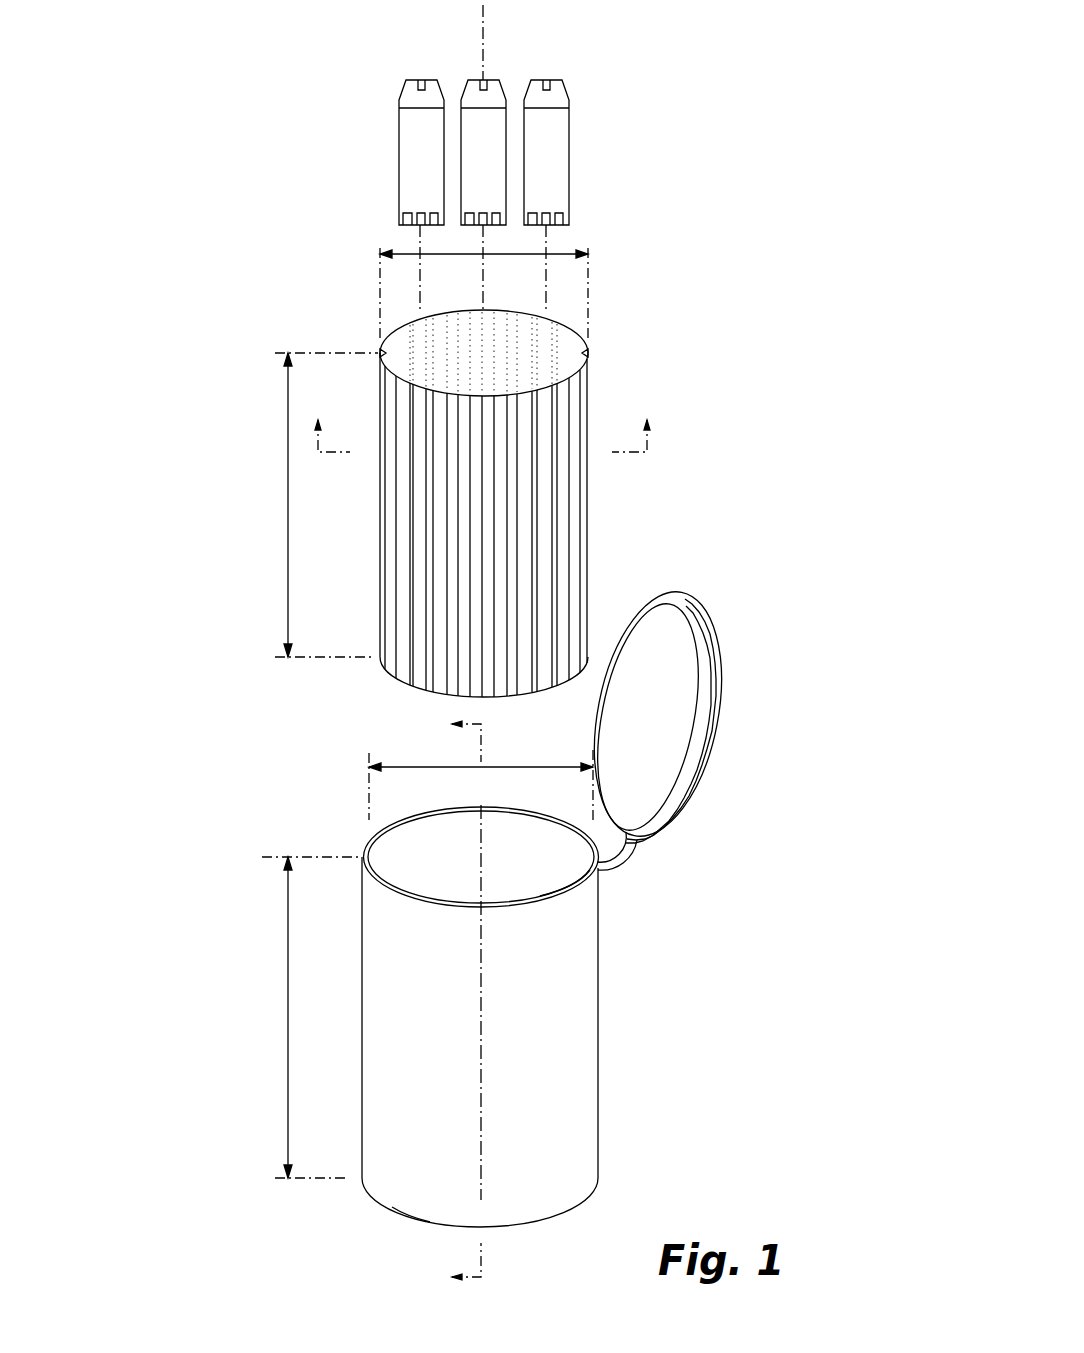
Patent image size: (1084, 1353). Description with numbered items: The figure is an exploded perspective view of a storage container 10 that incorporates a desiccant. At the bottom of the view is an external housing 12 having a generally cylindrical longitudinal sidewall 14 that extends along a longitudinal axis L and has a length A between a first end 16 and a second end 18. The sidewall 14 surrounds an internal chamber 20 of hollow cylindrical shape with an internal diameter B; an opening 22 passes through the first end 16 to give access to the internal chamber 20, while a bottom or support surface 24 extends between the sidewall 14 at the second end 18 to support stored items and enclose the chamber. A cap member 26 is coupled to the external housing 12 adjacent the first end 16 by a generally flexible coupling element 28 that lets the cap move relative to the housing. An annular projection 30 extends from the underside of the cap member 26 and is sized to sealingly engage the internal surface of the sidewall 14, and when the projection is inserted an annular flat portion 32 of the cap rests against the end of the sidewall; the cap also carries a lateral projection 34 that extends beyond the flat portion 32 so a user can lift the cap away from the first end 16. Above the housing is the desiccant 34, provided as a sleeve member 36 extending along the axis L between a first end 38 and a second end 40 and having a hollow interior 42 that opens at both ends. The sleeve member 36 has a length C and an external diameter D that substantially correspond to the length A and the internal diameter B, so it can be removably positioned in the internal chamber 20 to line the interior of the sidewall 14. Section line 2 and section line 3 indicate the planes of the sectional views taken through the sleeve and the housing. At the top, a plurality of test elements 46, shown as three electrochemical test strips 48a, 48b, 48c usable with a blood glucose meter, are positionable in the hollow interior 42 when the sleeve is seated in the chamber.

The container 10 is at (276, 681).
The external housing 12 is at (510, 1058).
The longitudinal sidewall 14 is at (362, 862).
The first end 16 is at (362, 852).
The second end 18 is at (598, 1180).
The internal chamber 20 is at (553, 880).
The opening 22 is at (525, 862).
The support surface 24 is at (402, 1218).
The cap member 26 is at (677, 714).
The coupling element 28 is at (627, 864).
The annular projection 30 is at (680, 777).
The annular flat portion 32 is at (637, 842).
The desiccant 34 is at (506, 469).
The sleeve member 36 is at (588, 396).
The first end 38 is at (588, 350).
The second end 40 is at (438, 690).
The hollow interior 42 is at (457, 355).
The test elements 46 is at (408, 65).
The electrochemical test strip 48a is at (397, 146).
The electrochemical test strip 48b is at (461, 115).
The electrochemical test strip 48c is at (570, 143).
The length A is at (288, 1025).
The diameter B is at (503, 765).
The length C is at (288, 512).
The diameter D is at (472, 256).
The longitudinal axis L is at (487, 28).
The section line 2- 2 is at (481, 422).
The section line 3- 3 is at (455, 1000).